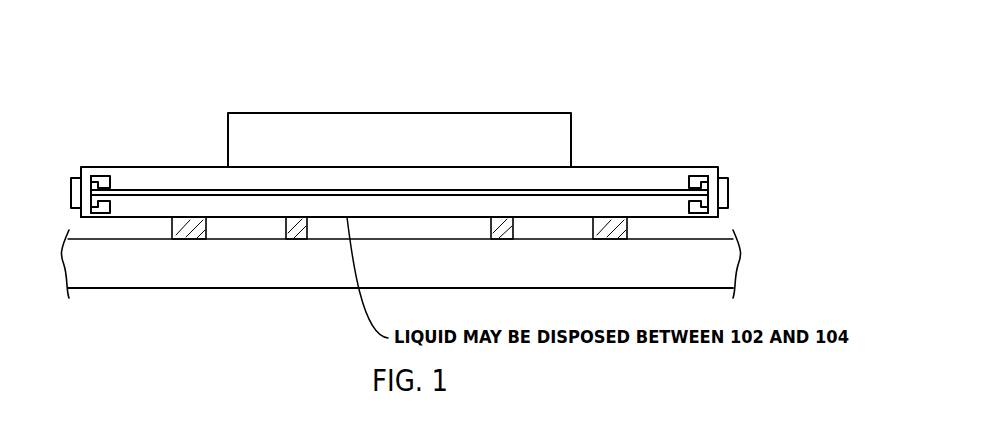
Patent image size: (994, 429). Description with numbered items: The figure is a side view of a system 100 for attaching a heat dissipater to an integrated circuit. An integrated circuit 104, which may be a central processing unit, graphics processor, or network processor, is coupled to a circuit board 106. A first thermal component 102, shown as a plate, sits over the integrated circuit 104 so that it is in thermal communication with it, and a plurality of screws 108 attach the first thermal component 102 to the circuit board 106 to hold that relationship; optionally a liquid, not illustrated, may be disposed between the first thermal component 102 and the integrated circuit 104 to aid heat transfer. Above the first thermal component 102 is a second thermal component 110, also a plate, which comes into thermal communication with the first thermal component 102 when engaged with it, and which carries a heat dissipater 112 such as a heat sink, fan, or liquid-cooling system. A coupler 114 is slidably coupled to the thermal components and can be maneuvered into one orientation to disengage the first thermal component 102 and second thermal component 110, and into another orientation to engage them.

The system 100 is at (620, 49).
The first thermal component 102 is at (252, 217).
The integrated circuit 104 is at (435, 227).
The circuit board 106 is at (547, 289).
The screws 108 is at (627, 227).
The second thermal component 110 is at (592, 167).
The heat dissipater 112 is at (400, 113).
The coupler 114 is at (708, 167).